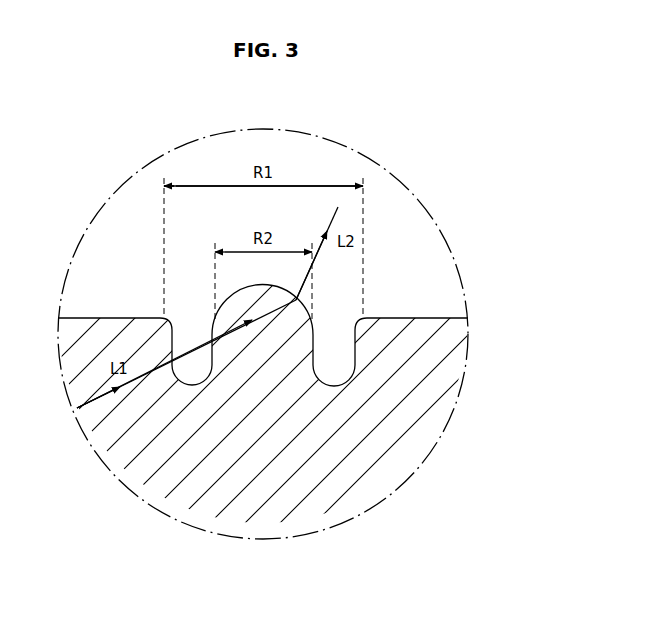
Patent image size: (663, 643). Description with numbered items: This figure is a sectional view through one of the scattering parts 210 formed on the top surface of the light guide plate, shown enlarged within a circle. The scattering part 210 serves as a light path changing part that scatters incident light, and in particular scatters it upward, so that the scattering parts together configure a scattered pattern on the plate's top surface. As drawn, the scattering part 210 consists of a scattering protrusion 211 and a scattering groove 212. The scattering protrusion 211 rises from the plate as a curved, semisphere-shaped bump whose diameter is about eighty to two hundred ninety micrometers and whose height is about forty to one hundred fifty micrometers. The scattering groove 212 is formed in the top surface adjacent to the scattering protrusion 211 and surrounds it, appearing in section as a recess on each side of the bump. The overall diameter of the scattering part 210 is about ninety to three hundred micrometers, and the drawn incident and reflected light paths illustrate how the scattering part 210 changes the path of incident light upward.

The scattering part 210 is at (331, 321).
The scattering protrusion 211 is at (262, 337).
The scattering groove 212 is at (201, 372).